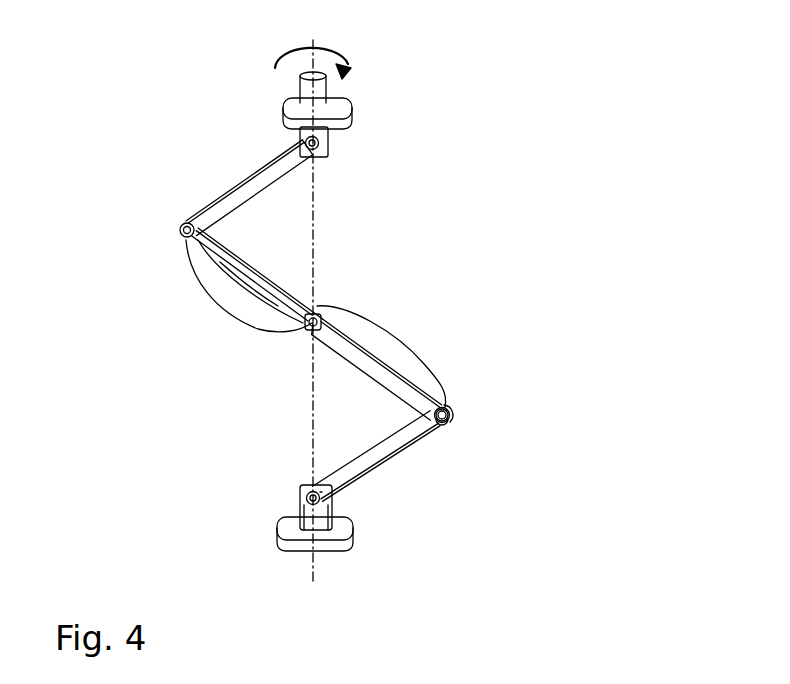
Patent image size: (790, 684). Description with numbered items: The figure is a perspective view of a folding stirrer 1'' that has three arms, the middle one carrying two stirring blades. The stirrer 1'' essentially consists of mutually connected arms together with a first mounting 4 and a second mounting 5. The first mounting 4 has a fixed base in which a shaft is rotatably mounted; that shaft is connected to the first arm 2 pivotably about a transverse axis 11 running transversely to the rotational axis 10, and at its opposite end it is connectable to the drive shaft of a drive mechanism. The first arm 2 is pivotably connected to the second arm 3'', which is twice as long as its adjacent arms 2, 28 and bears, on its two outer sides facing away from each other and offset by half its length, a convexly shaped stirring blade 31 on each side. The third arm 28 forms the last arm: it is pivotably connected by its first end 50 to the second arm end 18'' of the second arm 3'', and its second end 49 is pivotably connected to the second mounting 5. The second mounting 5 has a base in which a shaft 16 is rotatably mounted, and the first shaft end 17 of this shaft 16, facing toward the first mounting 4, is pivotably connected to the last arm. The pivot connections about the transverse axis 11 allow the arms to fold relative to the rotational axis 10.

The stirrer 1'' is at (165, 87).
The first arm 2 is at (253, 180).
The second arm 3'' is at (420, 304).
The first mounting 4 is at (333, 107).
The second mounting 5 is at (343, 550).
The rotational axis 10 is at (312, 400).
The transverse axis 11 is at (322, 142).
The shaft 16 is at (303, 517).
The first shaft end 17 is at (189, 479).
The second arm end 18'' is at (548, 389).
The third arm 28 is at (385, 453).
The stirring blade 31 is at (215, 290).
The second end 49 is at (327, 490).
The first end 50 is at (437, 423).